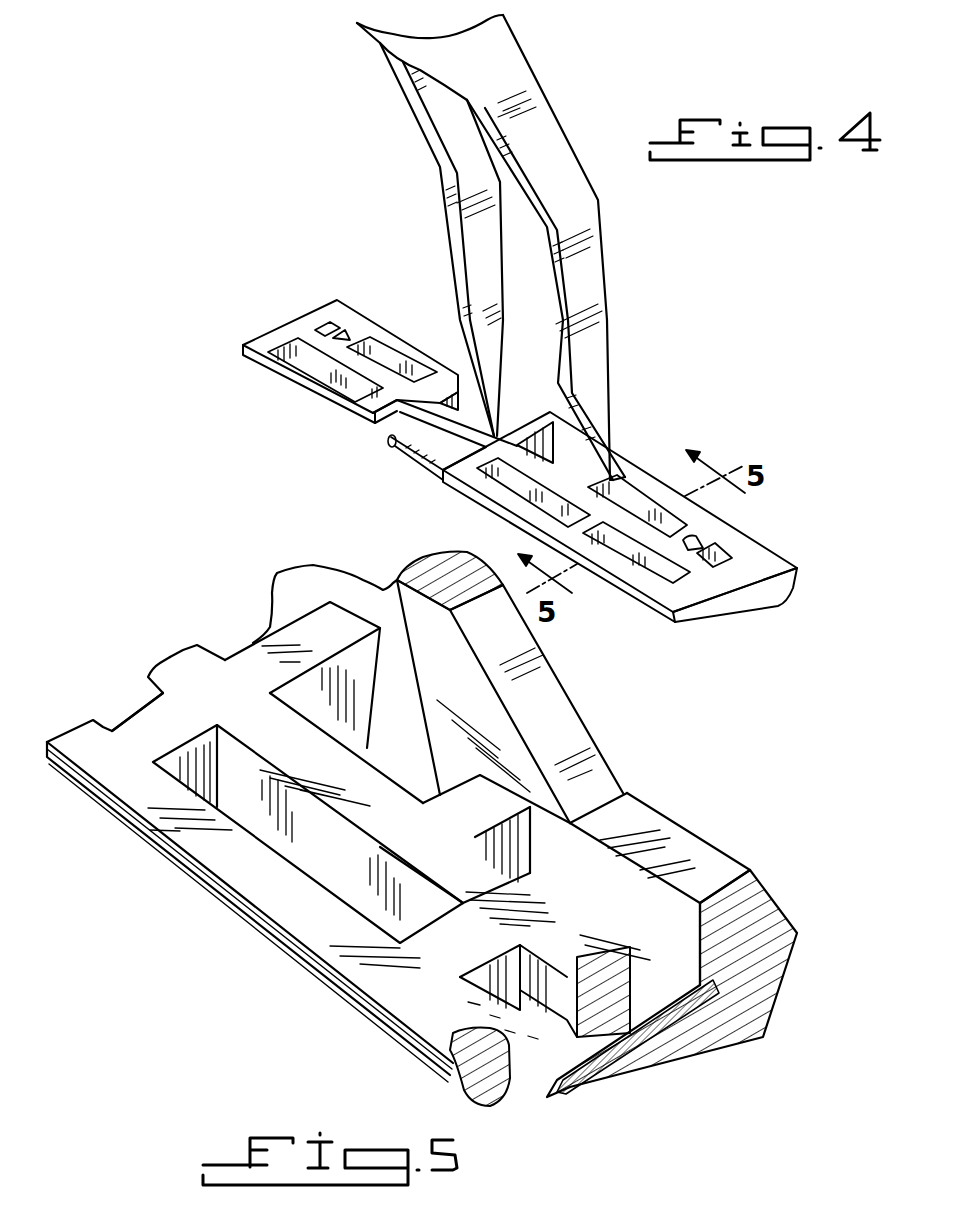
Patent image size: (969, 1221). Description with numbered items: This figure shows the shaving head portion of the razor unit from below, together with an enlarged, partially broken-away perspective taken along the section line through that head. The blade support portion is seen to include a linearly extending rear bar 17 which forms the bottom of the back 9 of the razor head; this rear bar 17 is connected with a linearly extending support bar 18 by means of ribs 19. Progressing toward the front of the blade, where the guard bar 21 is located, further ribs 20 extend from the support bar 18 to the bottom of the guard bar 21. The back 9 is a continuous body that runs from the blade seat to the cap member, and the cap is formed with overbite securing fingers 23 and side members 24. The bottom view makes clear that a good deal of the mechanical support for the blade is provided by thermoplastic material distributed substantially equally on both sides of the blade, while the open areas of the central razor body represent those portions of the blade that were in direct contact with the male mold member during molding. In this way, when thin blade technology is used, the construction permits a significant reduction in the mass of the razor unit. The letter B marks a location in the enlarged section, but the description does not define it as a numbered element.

In FIG. 4, the back 9 is at (797, 568).
In FIG. 5, the back 9 is at (797, 933).
In FIG. 4, the rear bar 17 is at (640, 507).
In FIG. 5, the rear bar 17 is at (647, 887).
In FIG. 4, the support bar 18 is at (307, 338).
In FIG. 5, the support bar 18 is at (183, 660).
In FIG. 4, the ribs 19 is at (377, 350).
In FIG. 5, the ribs 19 is at (285, 632).
In FIG. 4, the ribs 20 is at (370, 404).
In FIG. 5, the ribs 20 is at (140, 713).
In FIG. 4, the guard bar 21 is at (270, 372).
In FIG. 5, the guard bar 21 is at (157, 849).
In FIG. 5, the overbite securing fingers 23 is at (690, 1053).
In FIG. 4, the side members 24 is at (268, 336).
In FIG. 4, the bridge B is at (425, 453).
In FIG. 5, the bridge B is at (570, 1088).